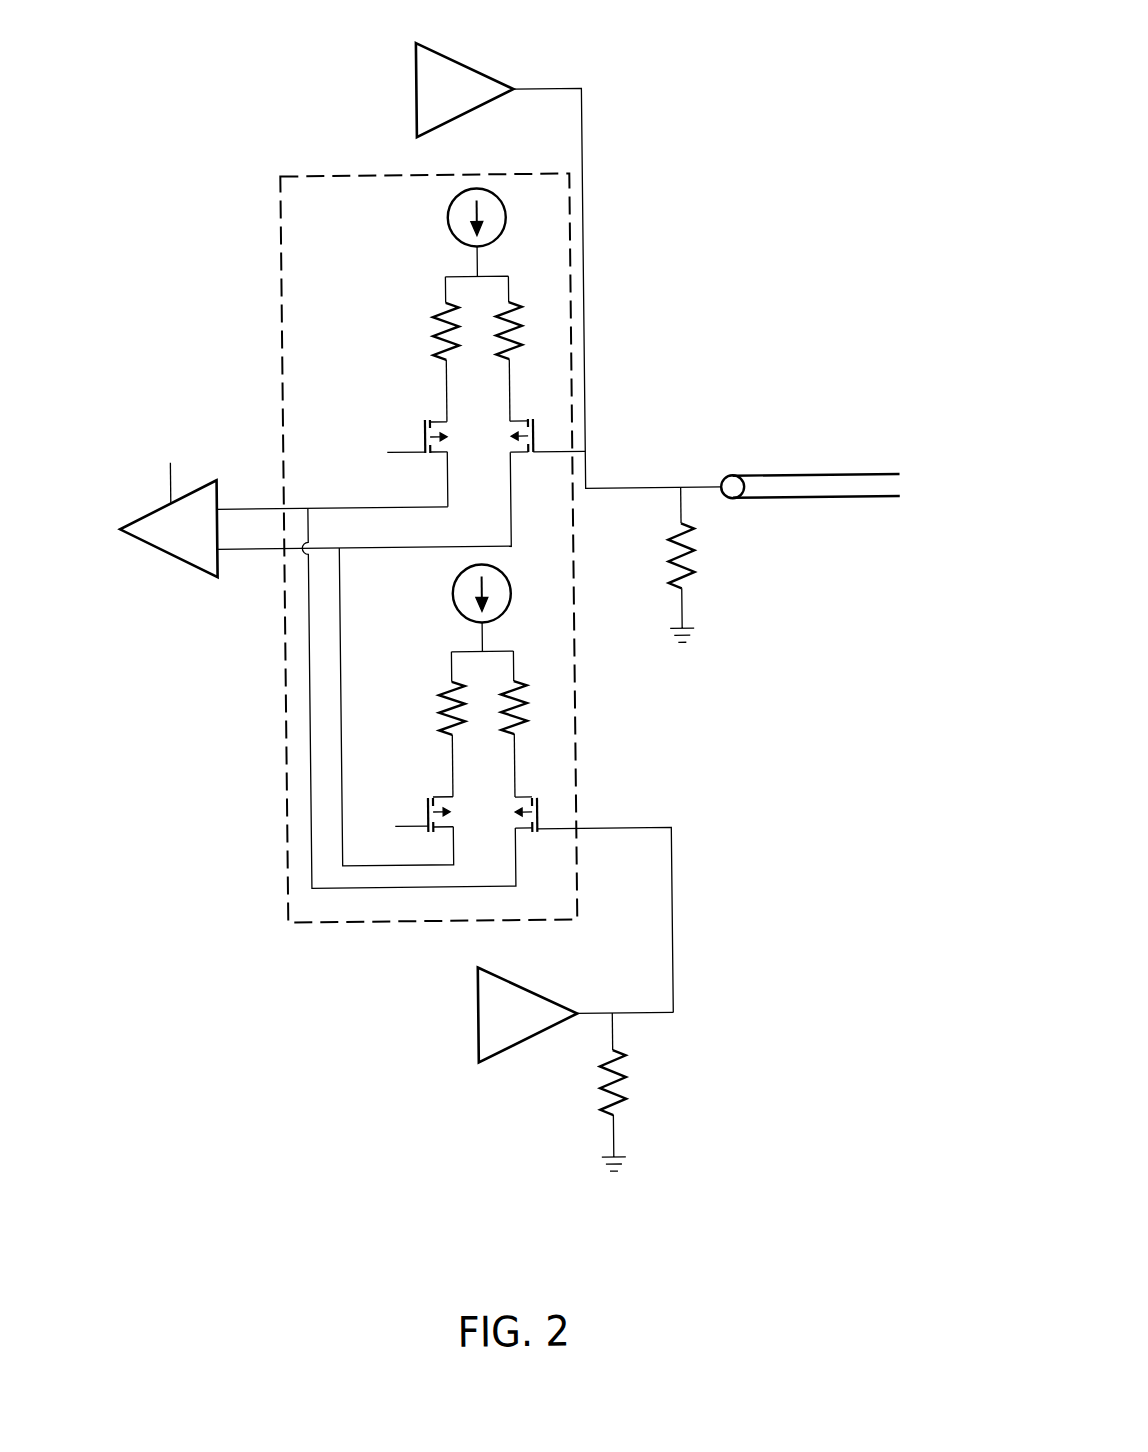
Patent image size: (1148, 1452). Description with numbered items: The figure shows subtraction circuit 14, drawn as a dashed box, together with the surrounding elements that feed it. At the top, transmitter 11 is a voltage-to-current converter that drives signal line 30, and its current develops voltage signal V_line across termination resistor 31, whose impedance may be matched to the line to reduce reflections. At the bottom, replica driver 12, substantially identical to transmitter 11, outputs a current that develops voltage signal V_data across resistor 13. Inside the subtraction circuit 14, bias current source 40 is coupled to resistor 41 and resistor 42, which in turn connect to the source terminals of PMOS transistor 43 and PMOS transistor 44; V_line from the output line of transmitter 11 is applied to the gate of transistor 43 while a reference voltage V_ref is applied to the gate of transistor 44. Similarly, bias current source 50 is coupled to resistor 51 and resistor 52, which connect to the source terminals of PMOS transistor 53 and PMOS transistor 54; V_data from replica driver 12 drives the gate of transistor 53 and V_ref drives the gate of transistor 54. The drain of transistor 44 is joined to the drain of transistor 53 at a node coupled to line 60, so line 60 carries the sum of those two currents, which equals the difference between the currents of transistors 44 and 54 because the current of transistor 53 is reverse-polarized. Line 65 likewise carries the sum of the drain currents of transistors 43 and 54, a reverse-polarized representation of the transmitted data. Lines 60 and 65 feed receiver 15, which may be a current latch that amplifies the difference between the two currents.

The transmitter 11 is at (460, 55).
The replica driver 12 is at (518, 986).
The resistor 13 is at (596, 1092).
The subtraction circuit 14 is at (296, 174).
The receiver 15 is at (170, 555).
The signal line 30 is at (794, 477).
The termination resistor 31 is at (706, 565).
The bias current source 40 is at (458, 245).
The resistor 41 is at (527, 362).
The resistor 42 is at (431, 363).
The PMOS transistor 43 is at (548, 475).
The PMOS transistor 44 is at (403, 455).
The bias current source 50 is at (463, 623).
The resistor 51 is at (532, 739).
The resistor 52 is at (436, 740).
The PMOS transistor 53 is at (594, 897).
The PMOS transistor 54 is at (407, 817).
The line 60 is at (366, 684).
The line 65 is at (366, 691).